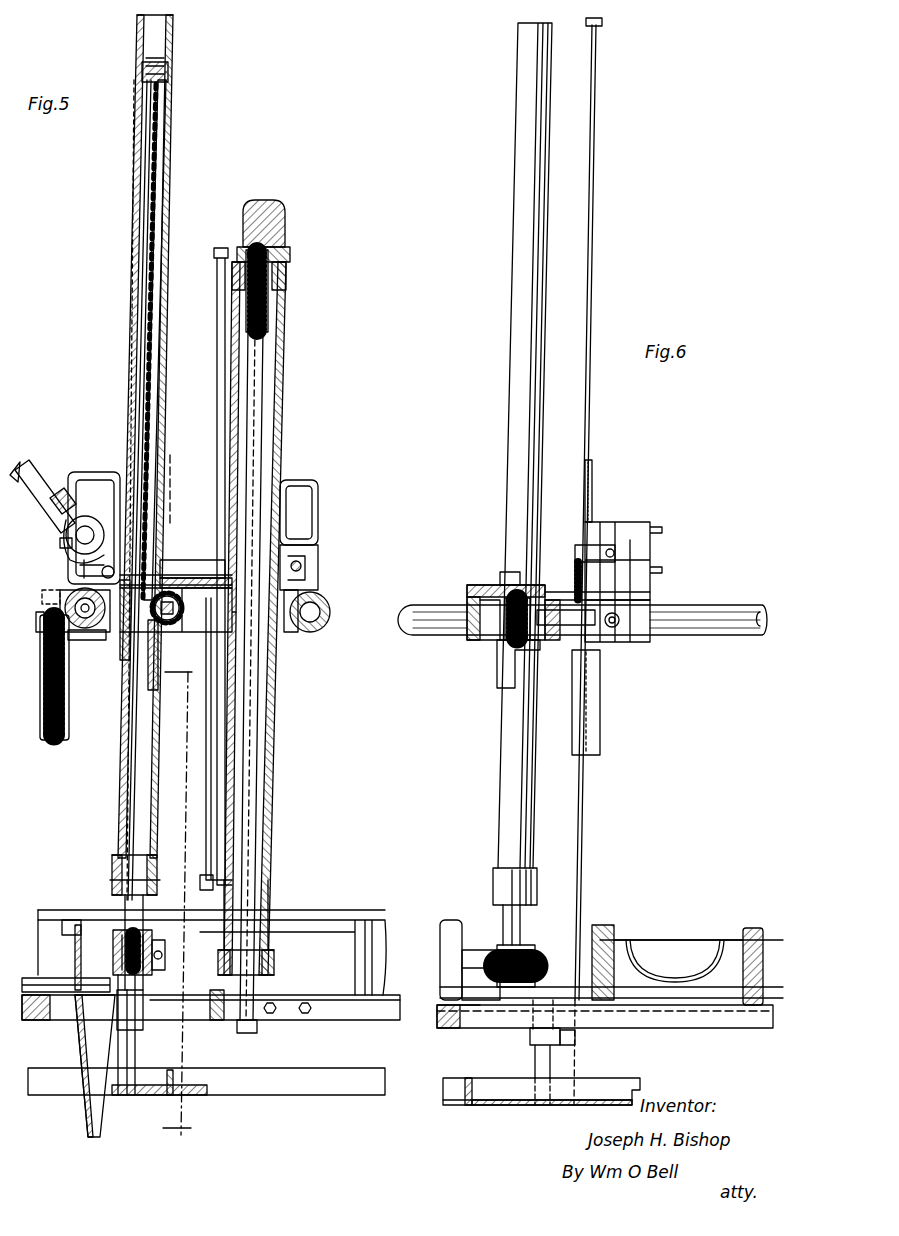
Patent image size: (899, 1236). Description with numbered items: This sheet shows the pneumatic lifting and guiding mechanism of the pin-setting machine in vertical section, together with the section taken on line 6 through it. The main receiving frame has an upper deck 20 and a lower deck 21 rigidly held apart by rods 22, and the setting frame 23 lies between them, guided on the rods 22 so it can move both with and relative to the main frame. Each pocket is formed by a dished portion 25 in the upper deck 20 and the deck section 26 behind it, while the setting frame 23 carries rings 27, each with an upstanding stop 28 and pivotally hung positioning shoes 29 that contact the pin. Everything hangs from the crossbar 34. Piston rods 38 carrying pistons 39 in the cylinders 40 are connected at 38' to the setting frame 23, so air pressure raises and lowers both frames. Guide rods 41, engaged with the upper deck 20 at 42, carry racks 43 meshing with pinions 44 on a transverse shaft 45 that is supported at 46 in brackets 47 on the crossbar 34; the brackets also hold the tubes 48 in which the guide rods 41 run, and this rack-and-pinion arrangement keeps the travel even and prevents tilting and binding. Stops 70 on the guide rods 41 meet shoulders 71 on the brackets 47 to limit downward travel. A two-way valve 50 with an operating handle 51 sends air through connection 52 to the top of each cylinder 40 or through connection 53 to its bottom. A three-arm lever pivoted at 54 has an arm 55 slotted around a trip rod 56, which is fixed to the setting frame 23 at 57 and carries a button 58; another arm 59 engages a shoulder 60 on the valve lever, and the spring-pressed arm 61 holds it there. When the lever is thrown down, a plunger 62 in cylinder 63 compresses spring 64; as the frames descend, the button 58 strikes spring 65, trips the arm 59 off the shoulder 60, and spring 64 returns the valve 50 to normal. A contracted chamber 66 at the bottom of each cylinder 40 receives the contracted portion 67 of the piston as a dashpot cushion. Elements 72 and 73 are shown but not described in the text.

In FIG. 5, the section line 6— 6 is at (163, 1128).
In FIG. 5, the upper deck 20 is at (378, 935).
In FIG. 6, the upper deck 20 is at (755, 928).
In FIG. 5, the lower deck 21 is at (330, 1092).
In FIG. 6, the lower deck 21 is at (632, 1095).
In FIG. 5, the rods 22 is at (138, 1052).
In FIG. 6, the rods 22 is at (536, 1060).
In FIG. 5, the setting frame 23 is at (366, 1015).
In FIG. 6, the setting frame 23 is at (724, 1030).
In FIG. 6, the dished portion 25 is at (702, 952).
In FIG. 6, the deck section 26 is at (672, 940).
In FIG. 5, the rings 27 is at (55, 992).
In FIG. 5, the upstanding stop 28 is at (72, 950).
In FIG. 5, the positioning shoes 29 is at (83, 1050).
In FIG. 5, the crossbar 34 is at (90, 632).
In FIG. 6, the crossbar 34 is at (434, 606).
In FIG. 5, the piston rods 38 is at (276, 675).
In FIG. 5, the connection of piston rods with intermediate frame 38' is at (254, 1041).
In FIG. 5, the pistons 39 is at (290, 280).
In FIG. 5, the cylinders 40 is at (284, 406).
In FIG. 5, the guide rods 41 is at (135, 770).
In FIG. 6, the guide rods 41 is at (508, 915).
In FIG. 5, the engagement of guide rods with upper deck 42 is at (100, 928).
In FIG. 6, the engagement of guide rods with upper deck 42 is at (520, 952).
In FIG. 5, the racks 43 is at (165, 240).
In FIG. 5, the pinions 44 is at (188, 626).
In FIG. 6, the pinions 44 is at (508, 668).
In FIG. 5, the transverse shaft 45 is at (182, 608).
In FIG. 6, the transverse shaft 45 is at (558, 628).
In FIG. 6, the shaft support 46 is at (505, 630).
In FIG. 5, the brackets 47 is at (180, 574).
In FIG. 6, the brackets 47 is at (498, 586).
In FIG. 5, the tubes 48 is at (124, 753).
In FIG. 6, the tubes 48 is at (505, 745).
In FIG. 5, the two-way valve 50 is at (88, 518).
In FIG. 6, the two-way valve 50 is at (638, 524).
In FIG. 5, the operating handle 51 is at (42, 478).
In FIG. 6, the operating handle 51 is at (592, 484).
In FIG. 5, the connection to top of cylinder 52 is at (218, 424).
In FIG. 5, the connection to bottom of cylinder 53 is at (209, 800).
In FIG. 5, the pivot 54 is at (60, 544).
In FIG. 6, the lever arm 55 is at (620, 592).
In FIG. 6, the trip rod 56 is at (593, 305).
In FIG. 6, the trip rod attachment 57 is at (572, 1032).
In FIG. 6, the button 58 is at (602, 24).
In FIG. 5, the lever arm 59 is at (118, 515).
In FIG. 6, the lever arm 59 is at (606, 545).
In FIG. 5, the shoulder 60 is at (78, 570).
In FIG. 6, the lever arm 61 is at (618, 628).
In FIG. 5, the plunger 62 is at (42, 604).
In FIG. 5, the cylinder 63 is at (44, 668).
In FIG. 6, the cylinder 63 is at (600, 716).
In FIG. 5, the spring 64 is at (44, 702).
In FIG. 6, the spring 65 is at (576, 572).
In FIG. 5, the contracted chamber 66 is at (270, 896).
In FIG. 5, the contracted portion of piston 67 is at (272, 330).
In FIG. 5, the stops 70 is at (170, 72).
In FIG. 5, the shoulders 71 is at (104, 622).
In FIG. 5, the pin 72 is at (118, 1092).
In FIG. 5, the plate 73 is at (148, 1098).
In FIG. 6, the plate 73 is at (514, 1106).